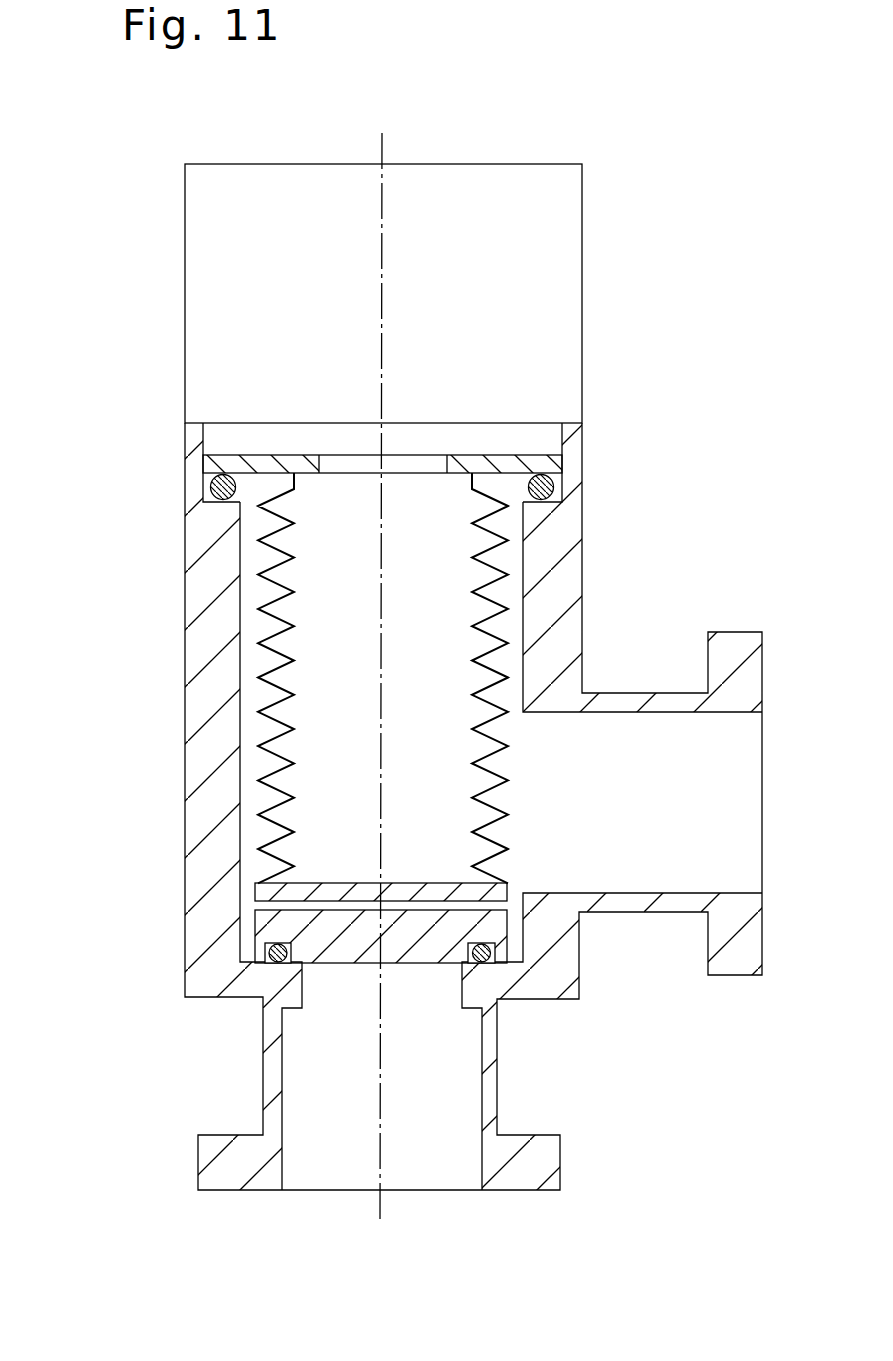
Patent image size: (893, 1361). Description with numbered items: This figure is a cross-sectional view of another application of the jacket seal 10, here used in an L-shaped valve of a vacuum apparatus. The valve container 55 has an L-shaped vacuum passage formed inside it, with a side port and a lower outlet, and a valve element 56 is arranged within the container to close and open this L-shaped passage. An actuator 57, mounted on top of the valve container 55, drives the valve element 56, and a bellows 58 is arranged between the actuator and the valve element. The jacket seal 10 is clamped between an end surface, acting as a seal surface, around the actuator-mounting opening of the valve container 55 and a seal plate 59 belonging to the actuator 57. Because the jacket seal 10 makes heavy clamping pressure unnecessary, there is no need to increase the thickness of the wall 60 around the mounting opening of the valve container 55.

The jacket seal 10 is at (512, 480).
The valve container 55 is at (185, 665).
The valve element 56 is at (505, 935).
The actuator 57 is at (583, 283).
The bellows 58 is at (265, 566).
The seal plate 59 is at (262, 455).
The wall 60 is at (186, 436).